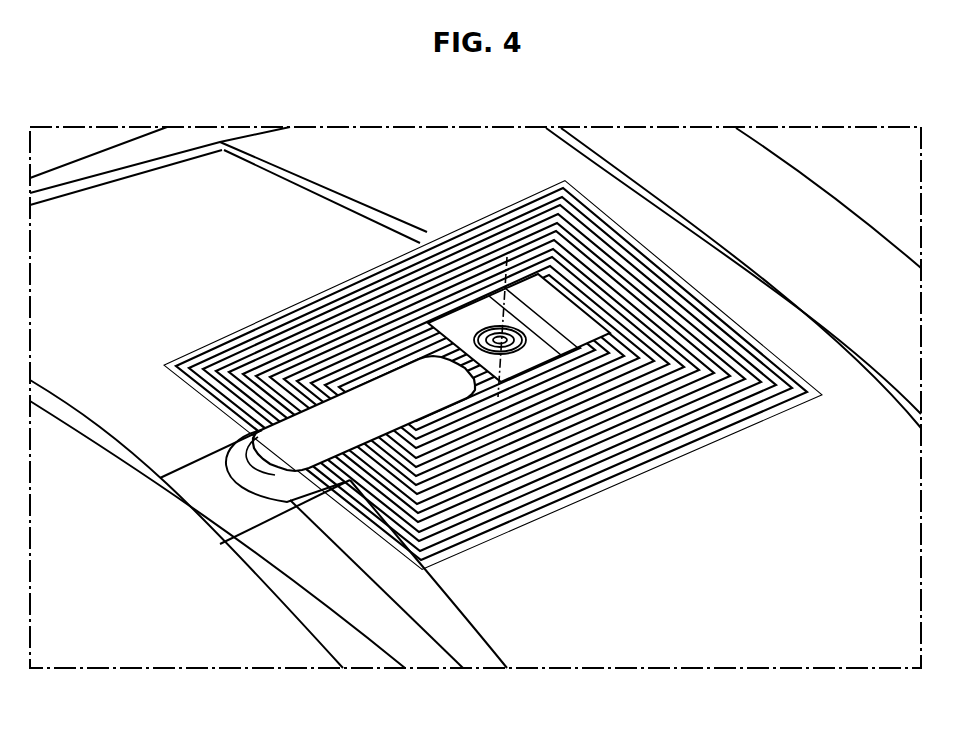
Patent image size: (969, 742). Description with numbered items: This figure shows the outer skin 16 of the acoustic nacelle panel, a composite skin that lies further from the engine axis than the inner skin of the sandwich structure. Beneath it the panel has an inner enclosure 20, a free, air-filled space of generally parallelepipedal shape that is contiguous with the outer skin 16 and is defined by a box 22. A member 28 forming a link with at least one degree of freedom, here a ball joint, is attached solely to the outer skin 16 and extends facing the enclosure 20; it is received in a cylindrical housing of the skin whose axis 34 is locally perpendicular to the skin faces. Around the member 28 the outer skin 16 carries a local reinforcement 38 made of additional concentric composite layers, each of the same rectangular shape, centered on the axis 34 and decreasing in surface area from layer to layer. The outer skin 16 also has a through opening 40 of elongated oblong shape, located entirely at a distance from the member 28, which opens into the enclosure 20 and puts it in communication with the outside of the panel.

The outer skin 16 is at (193, 257).
The inner enclosure 20 is at (350, 431).
The box 22 is at (383, 423).
The member forming a link 28 is at (527, 314).
The axis 34 is at (537, 270).
The local reinforcement 38 is at (651, 310).
The through opening 40 is at (318, 452).